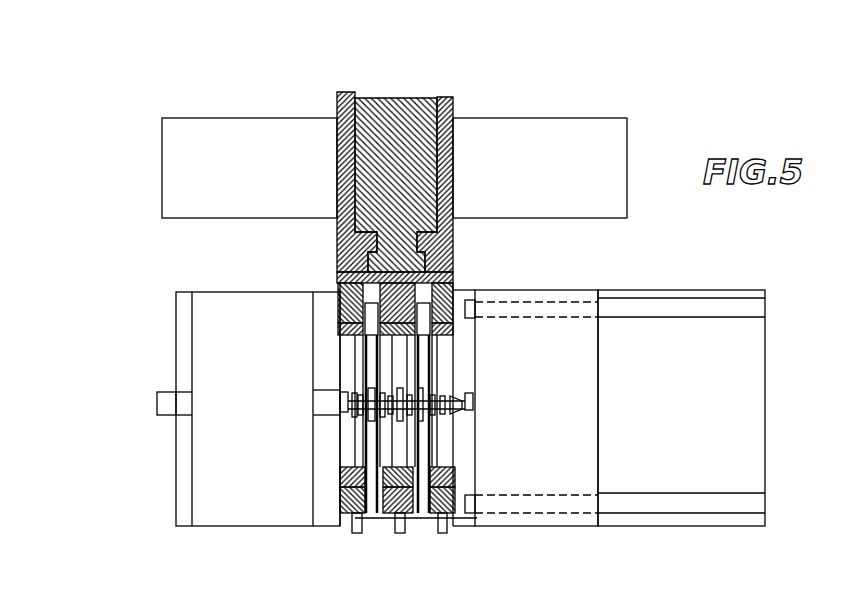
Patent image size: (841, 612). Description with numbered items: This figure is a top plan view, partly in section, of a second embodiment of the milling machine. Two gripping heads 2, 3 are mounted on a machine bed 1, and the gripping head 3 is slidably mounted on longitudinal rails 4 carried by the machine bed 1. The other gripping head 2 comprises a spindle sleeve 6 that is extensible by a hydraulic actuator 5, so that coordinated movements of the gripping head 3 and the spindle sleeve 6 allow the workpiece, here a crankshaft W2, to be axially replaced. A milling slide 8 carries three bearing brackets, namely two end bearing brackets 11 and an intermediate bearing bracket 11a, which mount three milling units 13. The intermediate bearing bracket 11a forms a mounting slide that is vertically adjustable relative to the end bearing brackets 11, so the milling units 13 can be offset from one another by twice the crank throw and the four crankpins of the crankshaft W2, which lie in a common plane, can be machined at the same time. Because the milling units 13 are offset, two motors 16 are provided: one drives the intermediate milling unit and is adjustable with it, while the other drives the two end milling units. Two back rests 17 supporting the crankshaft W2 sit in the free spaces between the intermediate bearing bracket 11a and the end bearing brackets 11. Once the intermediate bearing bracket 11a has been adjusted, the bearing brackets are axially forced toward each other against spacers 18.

The machine bed 1 is at (732, 350).
The gripping head 2 is at (210, 488).
The gripping head 3 is at (558, 334).
The longitudinal rails 4 is at (663, 310).
The hydraulic actuator 5 is at (168, 402).
The spindle sleeve 6 is at (332, 402).
The milling slide 8 is at (334, 104).
The bearing brackets 11 is at (340, 503).
The intermediate bearing bracket 11a is at (403, 503).
The milling units 13 is at (334, 334).
The motors 16 is at (215, 145).
The back rests 17 is at (352, 450).
The spacers 18 is at (385, 520).
The crankshaft W2 is at (462, 412).